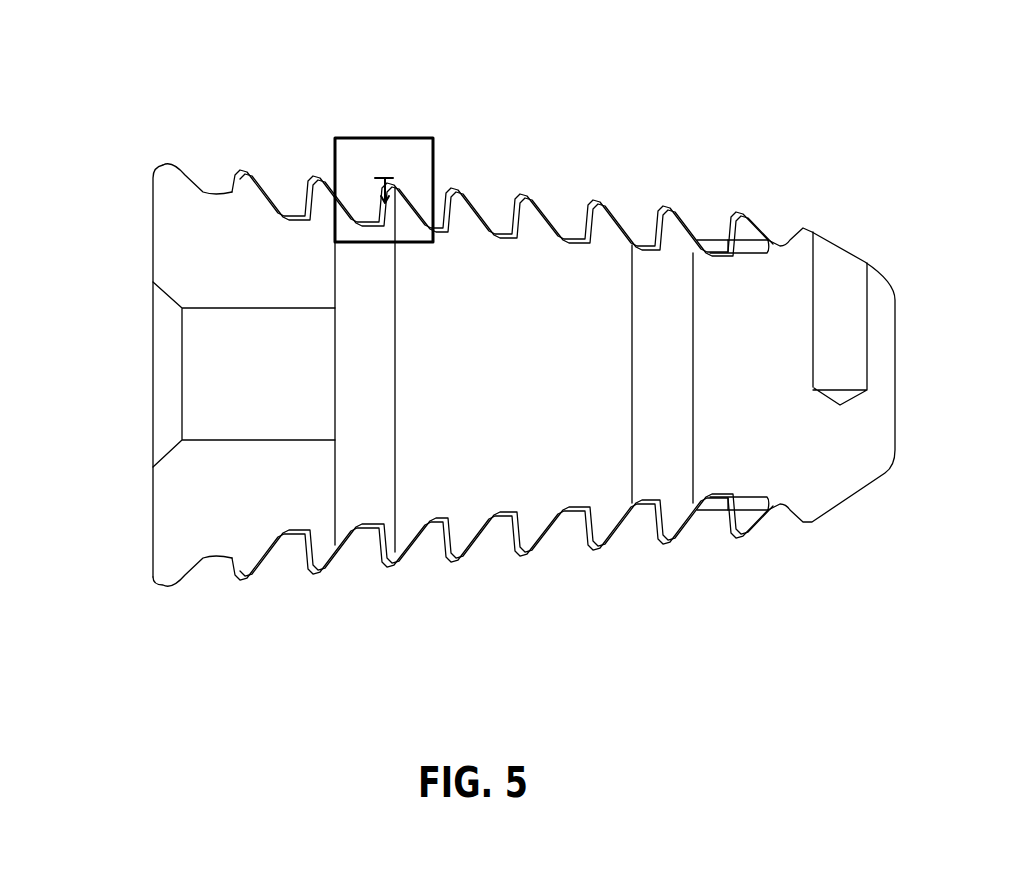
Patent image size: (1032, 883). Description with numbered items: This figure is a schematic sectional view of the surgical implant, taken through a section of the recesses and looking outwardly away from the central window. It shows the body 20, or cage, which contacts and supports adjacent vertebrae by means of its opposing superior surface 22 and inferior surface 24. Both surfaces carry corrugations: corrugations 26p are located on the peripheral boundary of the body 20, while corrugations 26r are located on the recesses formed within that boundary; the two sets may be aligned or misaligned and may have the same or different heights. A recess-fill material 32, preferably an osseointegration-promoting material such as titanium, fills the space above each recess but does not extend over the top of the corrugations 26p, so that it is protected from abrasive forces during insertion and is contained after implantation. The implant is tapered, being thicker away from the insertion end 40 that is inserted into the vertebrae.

The body 20 is at (523, 370).
The superior surface 22 is at (582, 115).
The inferior surface 24 is at (570, 575).
The corrugations on the recesses 26r is at (463, 213).
The corrugations on the peripheral boundary 26p is at (737, 213).
The recess-fill material 32 is at (252, 195).
The insertion end 40 is at (863, 520).